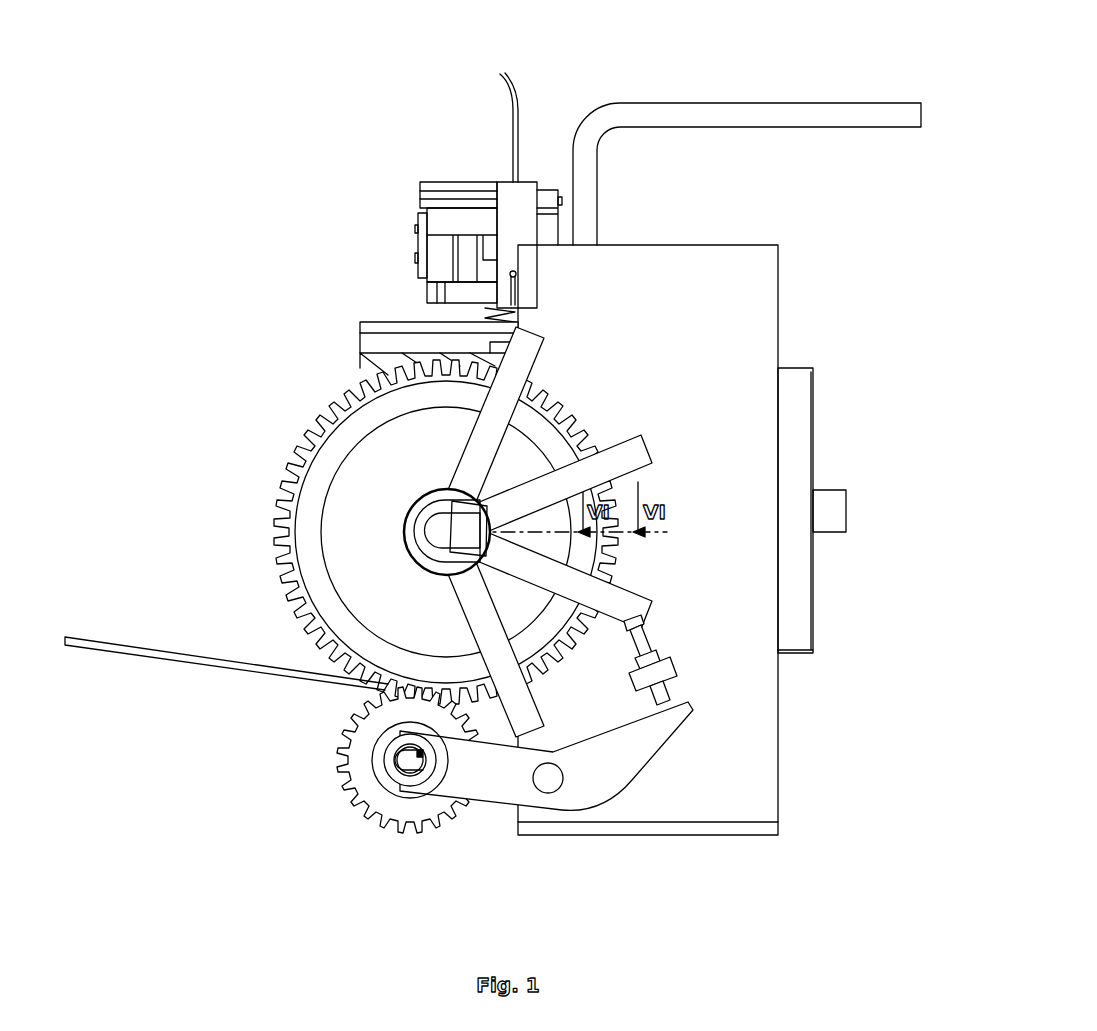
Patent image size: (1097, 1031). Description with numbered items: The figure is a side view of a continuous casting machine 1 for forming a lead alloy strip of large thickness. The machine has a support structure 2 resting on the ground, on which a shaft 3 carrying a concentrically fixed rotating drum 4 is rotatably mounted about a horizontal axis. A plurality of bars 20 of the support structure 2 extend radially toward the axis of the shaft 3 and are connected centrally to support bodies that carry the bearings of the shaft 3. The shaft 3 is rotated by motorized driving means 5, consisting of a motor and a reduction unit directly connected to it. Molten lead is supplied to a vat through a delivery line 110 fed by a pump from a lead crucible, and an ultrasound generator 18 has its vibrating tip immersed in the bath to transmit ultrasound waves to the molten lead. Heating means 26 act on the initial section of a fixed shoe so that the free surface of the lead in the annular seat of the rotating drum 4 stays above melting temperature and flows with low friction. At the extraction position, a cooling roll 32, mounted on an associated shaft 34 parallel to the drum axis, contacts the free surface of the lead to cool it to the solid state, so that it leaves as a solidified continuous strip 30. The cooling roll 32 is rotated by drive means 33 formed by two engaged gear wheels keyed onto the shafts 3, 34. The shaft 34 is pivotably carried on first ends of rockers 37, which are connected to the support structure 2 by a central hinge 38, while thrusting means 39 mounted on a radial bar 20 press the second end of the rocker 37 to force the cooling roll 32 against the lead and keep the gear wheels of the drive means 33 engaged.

The continuous casting machine 1 is at (258, 143).
The support structure 2 is at (758, 778).
The shaft 3 is at (443, 533).
The rotating drum 4 is at (333, 542).
The motorized driving means 5 is at (350, 290).
The ultrasound generator 18 is at (515, 205).
The bars 20 is at (633, 602).
The heating means 26 is at (797, 583).
The solidified continuous strip 30 is at (97, 648).
The cooling roll 32 is at (363, 793).
The drive means 33 is at (275, 722).
The shaft 34 is at (415, 763).
The rockers 37 is at (603, 768).
The central hinge 38 is at (552, 780).
The thrusting means 39 is at (650, 672).
The delivery line 110 is at (733, 112).